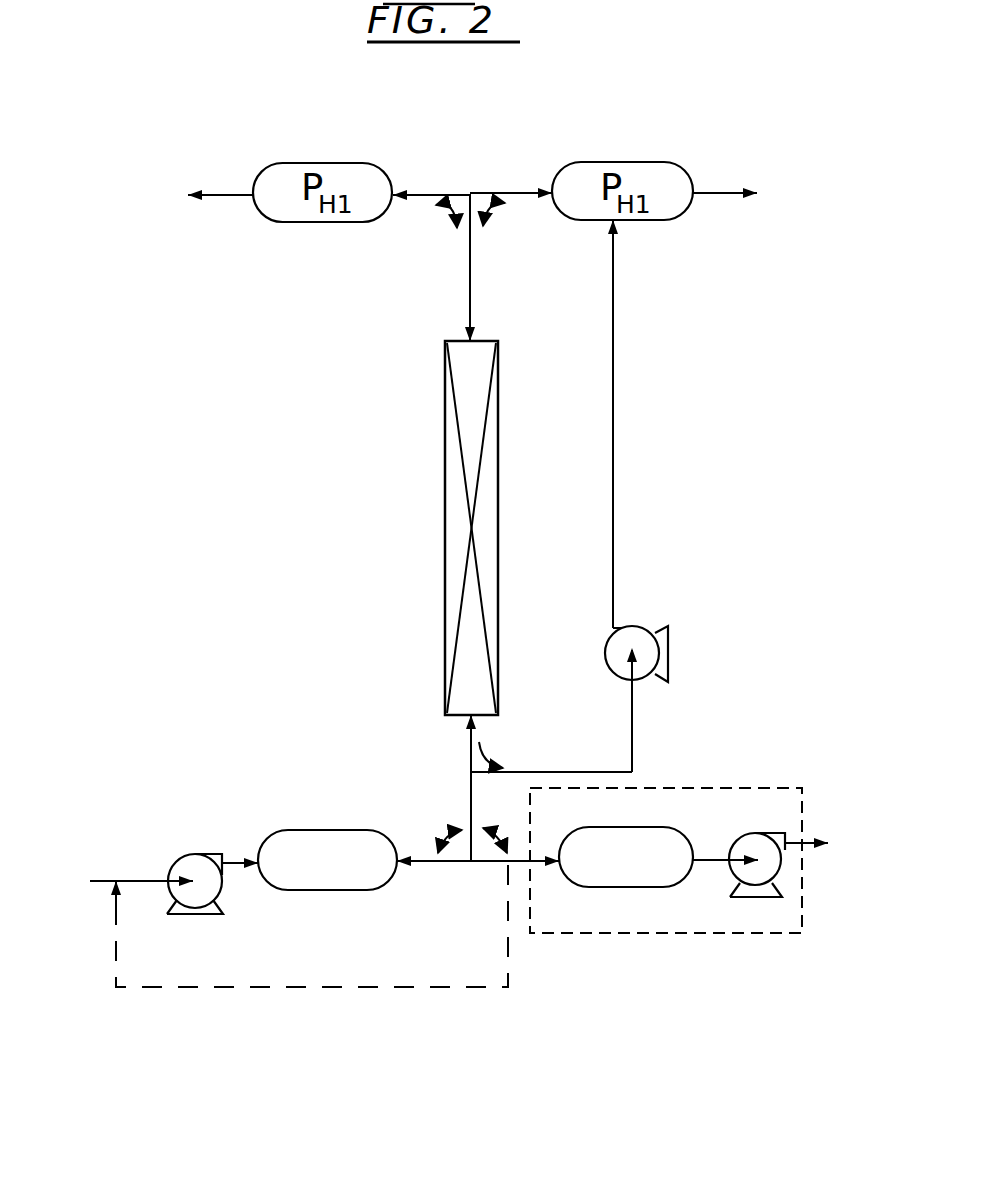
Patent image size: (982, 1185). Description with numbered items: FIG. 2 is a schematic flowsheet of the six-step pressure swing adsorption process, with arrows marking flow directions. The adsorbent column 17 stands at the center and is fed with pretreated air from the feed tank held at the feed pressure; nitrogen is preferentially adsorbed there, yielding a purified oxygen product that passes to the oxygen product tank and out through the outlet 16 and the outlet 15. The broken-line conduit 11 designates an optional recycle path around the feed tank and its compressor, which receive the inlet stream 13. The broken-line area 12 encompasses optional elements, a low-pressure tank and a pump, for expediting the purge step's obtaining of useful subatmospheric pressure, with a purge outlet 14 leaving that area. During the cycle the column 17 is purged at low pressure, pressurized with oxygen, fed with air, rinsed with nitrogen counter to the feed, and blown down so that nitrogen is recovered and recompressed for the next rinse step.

The high pressure feed section 11 is at (248, 987).
The low pressure permeate section 12 is at (573, 933).
The feed inlet line 13 is at (102, 881).
The permeate outlet line 14 is at (805, 843).
The retentate outlet line 15 is at (229, 194).
The outlet line 16 is at (713, 192).
The membrane separation column 17 is at (469, 397).